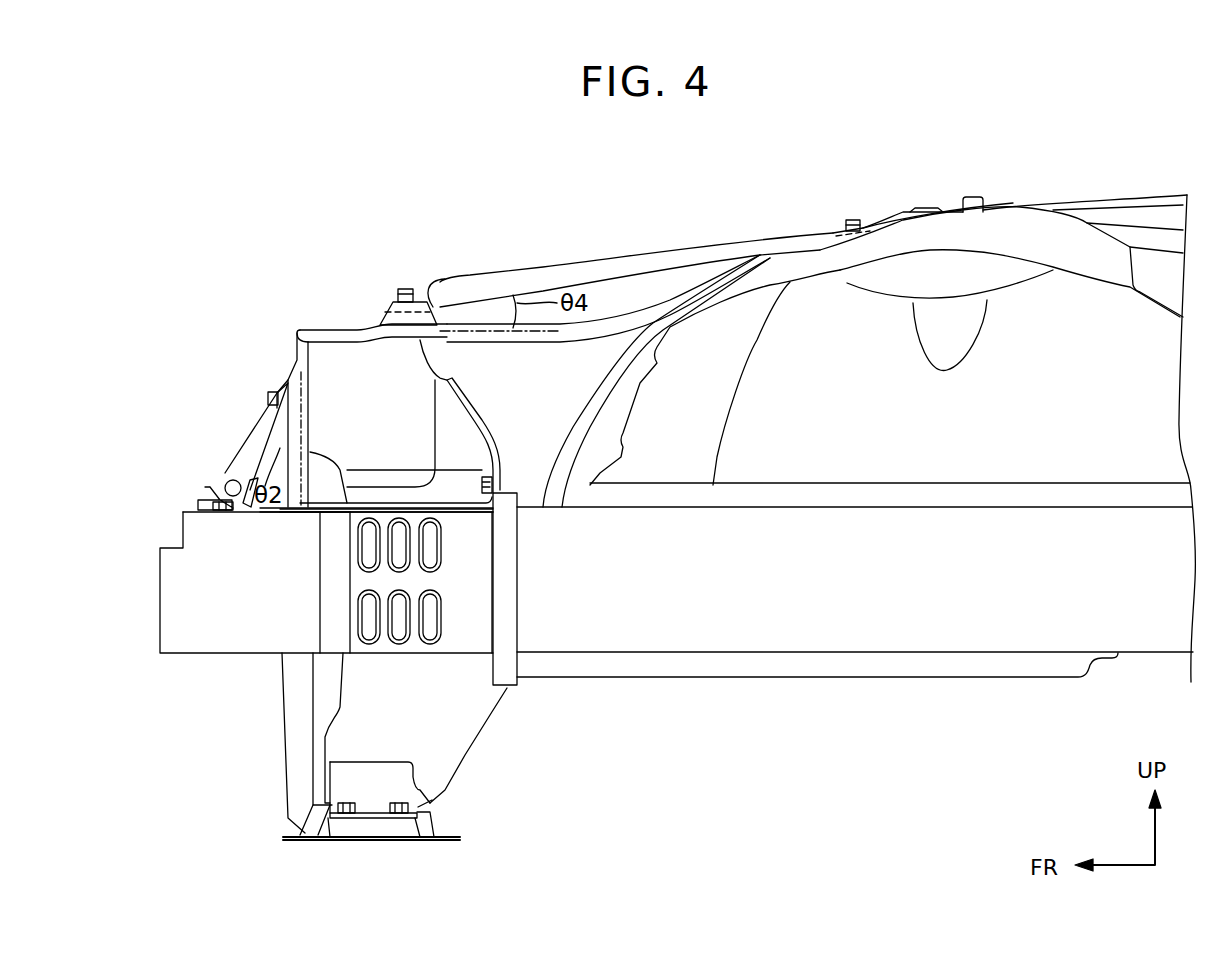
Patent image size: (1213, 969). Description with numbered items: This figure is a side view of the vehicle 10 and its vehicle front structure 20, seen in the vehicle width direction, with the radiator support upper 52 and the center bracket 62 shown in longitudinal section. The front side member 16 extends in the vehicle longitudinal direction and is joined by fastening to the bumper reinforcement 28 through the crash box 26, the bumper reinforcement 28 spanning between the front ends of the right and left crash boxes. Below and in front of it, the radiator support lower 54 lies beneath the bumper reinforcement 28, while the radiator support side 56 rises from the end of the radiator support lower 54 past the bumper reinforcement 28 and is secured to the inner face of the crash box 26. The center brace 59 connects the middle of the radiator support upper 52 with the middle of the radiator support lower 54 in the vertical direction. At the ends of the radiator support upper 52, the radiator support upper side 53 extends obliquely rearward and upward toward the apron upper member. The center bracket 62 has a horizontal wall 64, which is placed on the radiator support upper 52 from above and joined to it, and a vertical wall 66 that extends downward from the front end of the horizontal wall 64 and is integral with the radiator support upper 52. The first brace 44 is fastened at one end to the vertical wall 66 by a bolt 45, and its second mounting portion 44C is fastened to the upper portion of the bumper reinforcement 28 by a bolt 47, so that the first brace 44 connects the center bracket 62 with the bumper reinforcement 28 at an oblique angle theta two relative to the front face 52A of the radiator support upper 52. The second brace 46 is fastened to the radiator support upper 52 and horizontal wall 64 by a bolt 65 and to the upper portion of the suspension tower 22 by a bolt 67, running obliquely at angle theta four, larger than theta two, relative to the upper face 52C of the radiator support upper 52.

The vehicle body structure 10 is at (447, 225).
The front side member 16 is at (773, 630).
The vehicle front structure 20 is at (211, 473).
The suspension tower 22 is at (926, 210).
The crash box 26 is at (458, 642).
The bumper reinforcement 28 is at (204, 642).
The first brace 44 is at (233, 461).
The second mounting portion 44C is at (218, 497).
The bolt 45 is at (267, 398).
The second brace 46 is at (612, 266).
The bolt 47 is at (225, 513).
The radiator support upper 52 is at (367, 369).
The front face 52A is at (294, 349).
The upper face 52C is at (430, 332).
The radiator support upper side 53 is at (547, 334).
The radiator support lower 54 is at (370, 828).
The radiator support side 56 is at (436, 756).
The center brace 59 is at (290, 731).
The center bracket 62 is at (337, 379).
The horizontal wall 64 is at (355, 327).
The bolt 65 is at (405, 287).
The vertical wall 66 is at (290, 368).
The bolt 67 is at (853, 218).